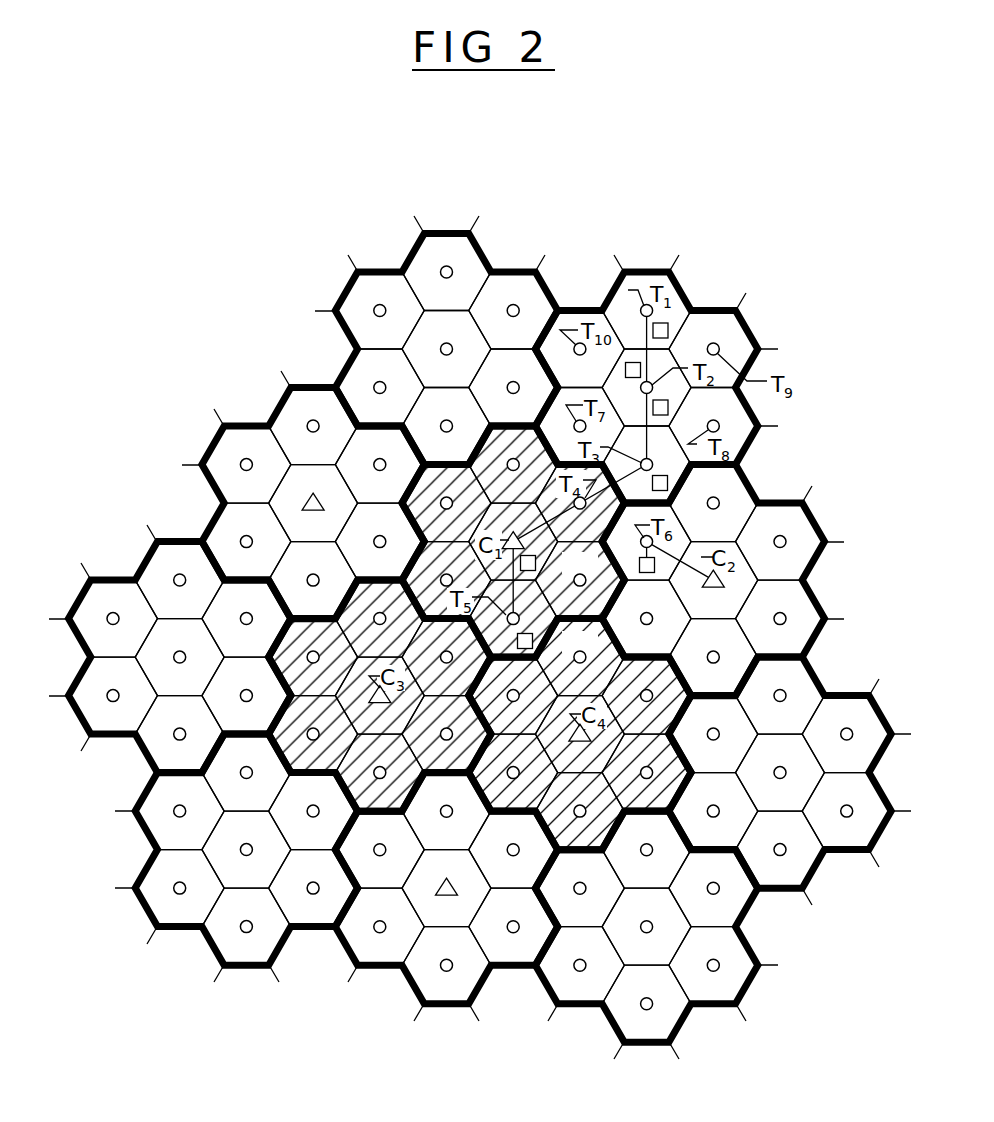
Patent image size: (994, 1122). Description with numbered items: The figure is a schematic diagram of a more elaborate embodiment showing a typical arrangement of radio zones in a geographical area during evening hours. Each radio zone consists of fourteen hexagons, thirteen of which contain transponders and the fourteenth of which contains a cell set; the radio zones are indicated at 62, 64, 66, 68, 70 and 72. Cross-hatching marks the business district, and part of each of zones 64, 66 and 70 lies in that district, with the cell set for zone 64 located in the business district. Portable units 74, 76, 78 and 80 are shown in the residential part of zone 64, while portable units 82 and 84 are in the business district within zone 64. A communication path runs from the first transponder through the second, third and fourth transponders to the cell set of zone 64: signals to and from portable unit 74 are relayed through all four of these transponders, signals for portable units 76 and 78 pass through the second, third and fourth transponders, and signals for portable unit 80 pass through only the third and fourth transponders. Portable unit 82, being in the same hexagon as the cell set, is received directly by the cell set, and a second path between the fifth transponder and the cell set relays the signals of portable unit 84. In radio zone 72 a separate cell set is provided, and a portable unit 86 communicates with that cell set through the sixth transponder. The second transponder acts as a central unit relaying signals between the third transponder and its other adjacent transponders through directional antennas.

The radio zone 62 is at (410, 245).
The radio zone 64 is at (683, 285).
The radio zone 66 is at (147, 558).
The radio zone 68 is at (413, 995).
The radio zone 70 is at (684, 1033).
The radio zone 72 is at (816, 878).
The portable unit 74 is at (668, 330).
The portable unit 76 is at (626, 372).
The portable unit 78 is at (668, 407).
The portable unit 80 is at (667, 483).
The portable unit 82 is at (535, 563).
The portable unit 84 is at (532, 642).
The portable unit 86 is at (643, 572).